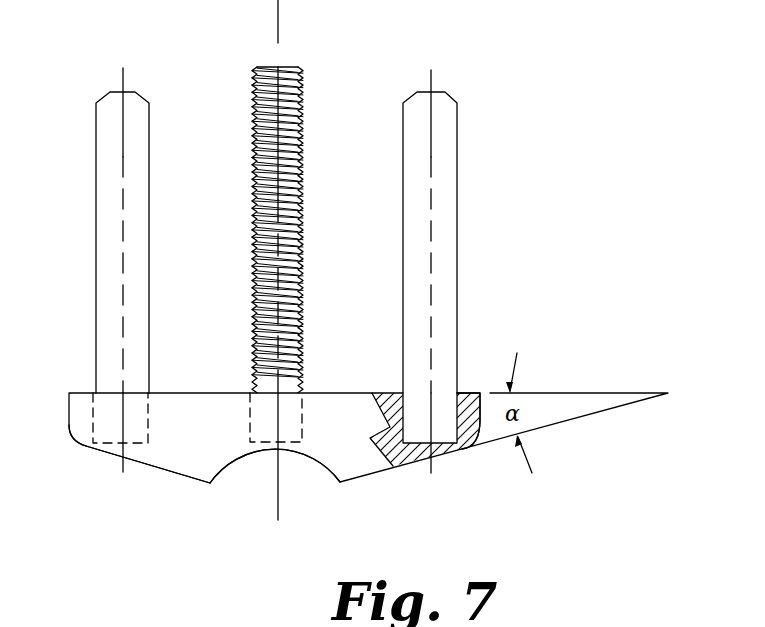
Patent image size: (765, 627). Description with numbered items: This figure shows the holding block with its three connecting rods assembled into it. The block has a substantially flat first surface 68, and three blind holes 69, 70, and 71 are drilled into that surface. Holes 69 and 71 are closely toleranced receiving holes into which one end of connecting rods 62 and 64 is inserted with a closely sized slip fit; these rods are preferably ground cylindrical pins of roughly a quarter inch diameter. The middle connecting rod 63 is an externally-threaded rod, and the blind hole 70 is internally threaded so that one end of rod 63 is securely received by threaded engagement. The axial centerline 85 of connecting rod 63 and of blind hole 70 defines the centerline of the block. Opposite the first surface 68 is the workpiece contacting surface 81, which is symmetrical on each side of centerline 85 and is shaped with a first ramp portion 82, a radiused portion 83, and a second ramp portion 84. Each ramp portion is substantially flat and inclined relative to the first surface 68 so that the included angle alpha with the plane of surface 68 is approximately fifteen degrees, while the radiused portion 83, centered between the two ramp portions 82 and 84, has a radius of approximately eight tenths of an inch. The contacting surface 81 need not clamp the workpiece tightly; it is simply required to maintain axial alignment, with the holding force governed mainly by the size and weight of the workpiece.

The connecting rod 62 is at (443, 202).
The connecting rod 63 is at (292, 175).
The connecting rod 64 is at (123, 185).
The first surface 68 is at (215, 393).
The blind hole 69 is at (457, 393).
The blind hole 70 is at (292, 415).
The blind hole 71 is at (123, 422).
The workpiece contacting surface 81 is at (178, 473).
The first ramp portion 82 is at (113, 458).
The radiused portion 83 is at (253, 458).
The second ramp portion 84 is at (393, 463).
The axial centerline 85 is at (278, 12).